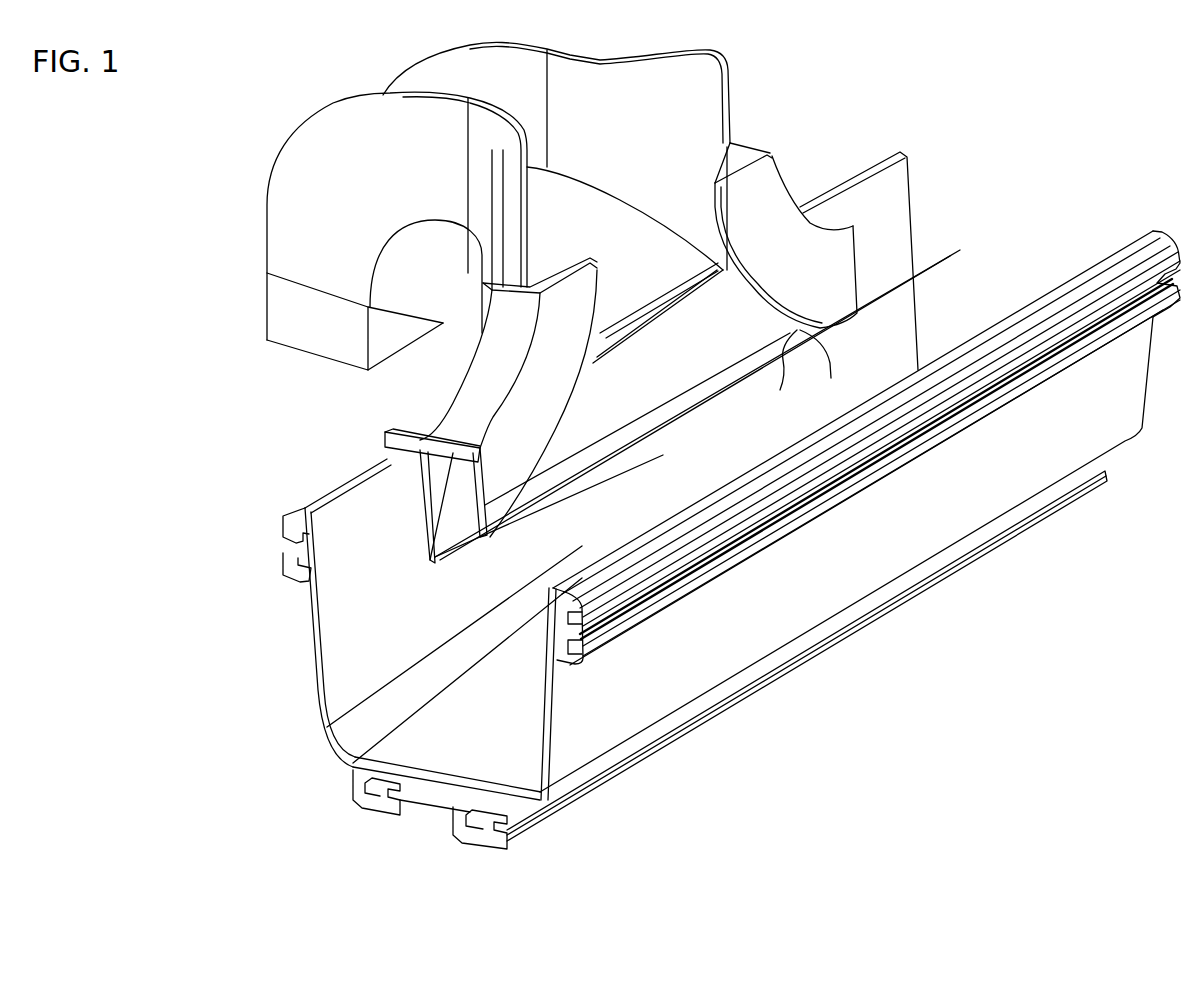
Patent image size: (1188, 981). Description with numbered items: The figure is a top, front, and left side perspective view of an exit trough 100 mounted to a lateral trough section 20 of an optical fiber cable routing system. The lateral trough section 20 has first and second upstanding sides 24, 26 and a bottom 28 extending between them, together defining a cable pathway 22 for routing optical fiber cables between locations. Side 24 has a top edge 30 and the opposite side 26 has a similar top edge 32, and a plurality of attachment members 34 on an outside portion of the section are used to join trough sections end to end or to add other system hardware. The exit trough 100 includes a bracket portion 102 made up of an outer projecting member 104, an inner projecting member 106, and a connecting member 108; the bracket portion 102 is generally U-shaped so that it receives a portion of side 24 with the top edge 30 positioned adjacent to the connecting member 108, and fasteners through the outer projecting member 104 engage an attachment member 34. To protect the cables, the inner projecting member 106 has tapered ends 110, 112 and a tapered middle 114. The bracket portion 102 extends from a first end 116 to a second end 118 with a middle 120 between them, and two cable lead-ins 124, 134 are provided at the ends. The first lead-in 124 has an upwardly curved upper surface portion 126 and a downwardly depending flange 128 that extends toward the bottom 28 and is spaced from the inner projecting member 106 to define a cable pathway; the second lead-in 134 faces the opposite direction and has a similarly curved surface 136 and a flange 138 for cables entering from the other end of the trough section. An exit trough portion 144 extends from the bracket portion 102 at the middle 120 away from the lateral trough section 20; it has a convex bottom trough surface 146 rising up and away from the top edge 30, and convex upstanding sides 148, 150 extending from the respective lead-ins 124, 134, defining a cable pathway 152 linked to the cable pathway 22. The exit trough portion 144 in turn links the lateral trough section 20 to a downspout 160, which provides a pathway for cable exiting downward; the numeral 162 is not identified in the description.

The lateral trough section 20 is at (683, 539).
The cable pathway 22 is at (435, 645).
The first upstanding side 24 is at (374, 615).
The second upstanding side 26 is at (637, 702).
The bottom 28 is at (490, 757).
The top edge 30 is at (372, 515).
The top edge 32 is at (1083, 290).
The attachment members 34 is at (283, 568).
The exit trough 100 is at (581, 287).
The bracket portion 102 is at (385, 440).
The outer projecting member 104 is at (385, 446).
The inner projecting member 106 is at (697, 405).
The connecting member 108 is at (374, 486).
The tapered end 110 is at (417, 507).
The tapered end 112 is at (783, 372).
The tapered middle 114 is at (647, 437).
The first end 116 is at (428, 546).
The second end 118 is at (826, 366).
The middle 120 is at (670, 398).
The first lead-in 124 is at (461, 361).
The upper surface portion 126 is at (463, 418).
The flange 128 is at (518, 483).
The second lead-in 134 is at (816, 223).
The upwardly curved surface 136 is at (822, 222).
The flange 138 is at (830, 305).
The exit trough portion 144 is at (596, 135).
The bottom trough surface 146 is at (635, 290).
The upstanding side 148 is at (515, 210).
The upstanding side 150 is at (708, 90).
The cable pathway 152 is at (565, 240).
The downspout 160 is at (365, 213).
The housing base block 162 is at (282, 348).